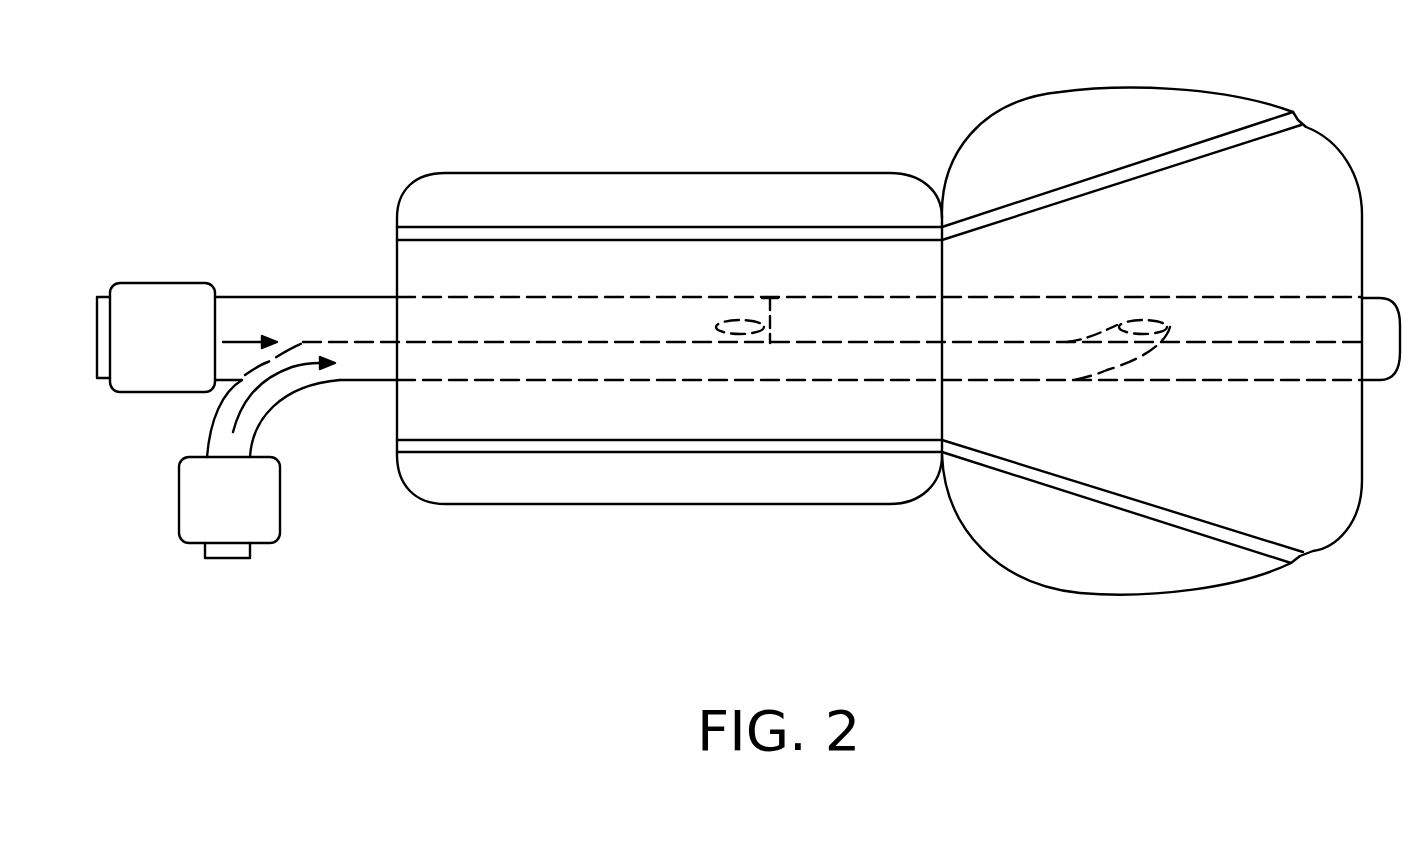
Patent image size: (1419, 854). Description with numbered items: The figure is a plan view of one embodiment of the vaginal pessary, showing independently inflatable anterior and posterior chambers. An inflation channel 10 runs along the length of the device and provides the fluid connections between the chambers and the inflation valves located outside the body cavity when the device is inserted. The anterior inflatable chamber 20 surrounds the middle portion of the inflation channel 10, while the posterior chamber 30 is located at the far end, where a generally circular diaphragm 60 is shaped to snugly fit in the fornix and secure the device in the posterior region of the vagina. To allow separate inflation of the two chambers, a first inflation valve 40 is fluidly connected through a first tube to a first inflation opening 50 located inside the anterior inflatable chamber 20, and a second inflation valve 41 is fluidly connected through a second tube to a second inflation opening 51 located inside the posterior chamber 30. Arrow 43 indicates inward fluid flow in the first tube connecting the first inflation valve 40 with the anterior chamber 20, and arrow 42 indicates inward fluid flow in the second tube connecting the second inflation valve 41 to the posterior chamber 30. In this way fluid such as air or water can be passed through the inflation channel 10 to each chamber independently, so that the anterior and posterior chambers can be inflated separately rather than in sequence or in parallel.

The inflation channel 10 is at (336, 278).
The anterior inflatable chamber 20 is at (716, 164).
The posterior chamber 30 is at (1316, 111).
The first inflation valve 40 is at (125, 393).
The second inflation valve 41 is at (280, 517).
The arrow indicating inward fluid flow in second tube 42 is at (267, 390).
The arrow indicating inward fluid flow in first tube 43 is at (242, 340).
The first inflation opening 50 is at (712, 325).
The second inflation opening 51 is at (1170, 327).
The diaphragm 60 is at (790, 453).